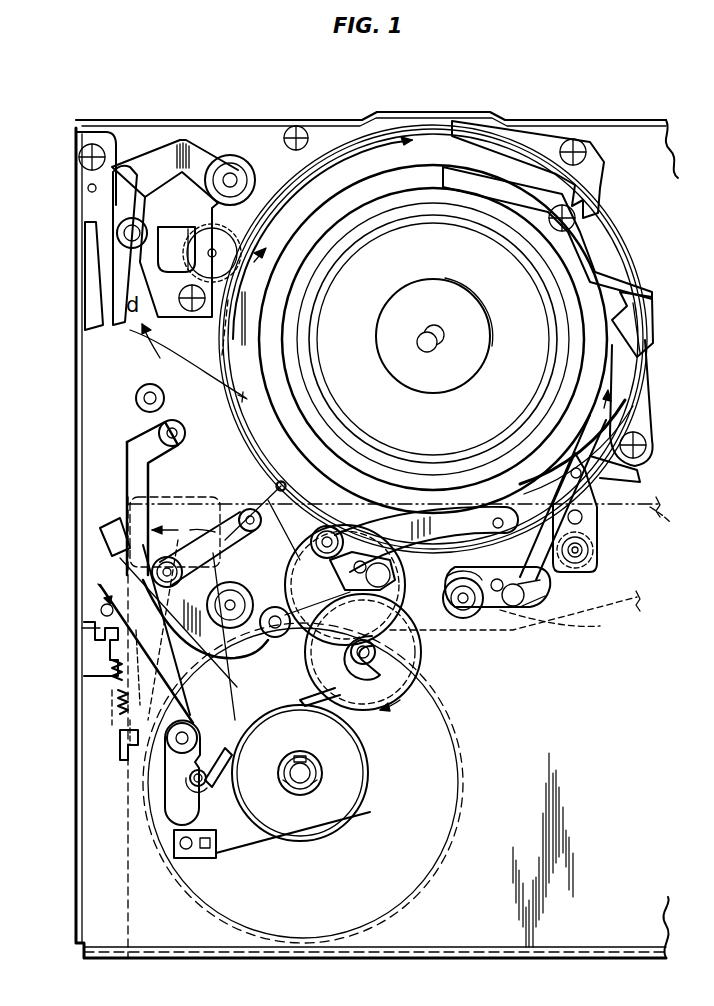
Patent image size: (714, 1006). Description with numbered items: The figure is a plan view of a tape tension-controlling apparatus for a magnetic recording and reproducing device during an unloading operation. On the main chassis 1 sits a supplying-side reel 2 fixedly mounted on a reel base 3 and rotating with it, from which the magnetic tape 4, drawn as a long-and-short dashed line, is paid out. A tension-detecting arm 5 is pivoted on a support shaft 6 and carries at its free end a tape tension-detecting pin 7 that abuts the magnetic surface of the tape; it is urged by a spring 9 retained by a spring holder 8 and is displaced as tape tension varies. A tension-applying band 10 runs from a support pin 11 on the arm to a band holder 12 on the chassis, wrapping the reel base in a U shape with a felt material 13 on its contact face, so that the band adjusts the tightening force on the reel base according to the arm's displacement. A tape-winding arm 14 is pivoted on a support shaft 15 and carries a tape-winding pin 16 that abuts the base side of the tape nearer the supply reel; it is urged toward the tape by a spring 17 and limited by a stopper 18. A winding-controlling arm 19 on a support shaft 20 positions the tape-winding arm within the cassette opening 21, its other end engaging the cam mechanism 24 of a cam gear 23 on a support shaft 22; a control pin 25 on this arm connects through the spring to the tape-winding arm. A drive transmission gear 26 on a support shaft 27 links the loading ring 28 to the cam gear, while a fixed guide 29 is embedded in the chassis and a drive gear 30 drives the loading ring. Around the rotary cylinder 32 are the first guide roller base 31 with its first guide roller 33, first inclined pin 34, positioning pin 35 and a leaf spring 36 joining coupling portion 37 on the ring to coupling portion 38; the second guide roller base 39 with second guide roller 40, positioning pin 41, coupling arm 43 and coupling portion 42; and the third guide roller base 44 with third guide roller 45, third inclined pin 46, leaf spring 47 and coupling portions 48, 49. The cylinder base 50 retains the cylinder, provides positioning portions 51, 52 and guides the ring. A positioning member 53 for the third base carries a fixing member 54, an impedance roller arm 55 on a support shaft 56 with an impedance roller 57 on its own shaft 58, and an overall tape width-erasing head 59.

The main chassis 1 is at (95, 378).
The supplying-side reel 2 is at (380, 928).
The reel base 3 is at (316, 836).
The magnetic tape 4 is at (665, 526).
The tension-detecting arm 5 is at (128, 470).
The support shaft 6 is at (170, 745).
The tape tension-detecting pin 7 is at (158, 430).
The spring holder 8 is at (84, 672).
The spring 9 is at (110, 708).
The tension-applying band 10 is at (236, 846).
The support pin 11 is at (208, 782).
The band holder 12 is at (205, 858).
The felt material 13 is at (366, 788).
The tape-winding arm 14 is at (148, 540).
The support shaft 15 is at (104, 538).
The tape-winding pin 16 is at (233, 495).
The spring 17 is at (100, 610).
The stopper 18 is at (92, 630).
The winding-controlling arm 19 is at (236, 652).
The support shaft 20 is at (278, 640).
The cassette opening 21 is at (548, 632).
The support shaft 22 is at (398, 650).
The cam gear 23 is at (405, 668).
The cam mechanism 24 is at (364, 690).
The control pin 25 is at (150, 574).
The drive transmission gear 26 is at (306, 584).
The support shaft 27 is at (234, 596).
The loading ring 28 is at (243, 358).
The fixed guide 29 is at (136, 400).
The drive gear 30 is at (166, 188).
The first guide roller base 31 is at (276, 486).
The rotary cylinder 32 is at (488, 235).
The first guide roller 33 is at (305, 552).
The first inclined pin 34 is at (366, 565).
The positioning pin 35 is at (276, 482).
The leaf spring 36 is at (478, 506).
The coupling portion 37 is at (498, 518).
The coupling portion 38 is at (343, 558).
The second guide roller base 39 is at (584, 516).
The second guide roller 40 is at (597, 564).
The positioning pin 41 is at (600, 476).
The coupling portion 42 is at (590, 540).
The coupling arm 43 is at (638, 470).
The third guide roller base 44 is at (532, 608).
The third guide roller 45 is at (466, 618).
The third inclined pin 46 is at (540, 612).
The leaf spring 47 is at (540, 548).
The coupling portion 48 is at (540, 462).
The coupling portion 49 is at (496, 598).
The cylinder base 50 is at (578, 258).
The positioning portion 51 is at (594, 178).
The positioning portion 52 is at (658, 304).
The positioning member 53 is at (116, 136).
The fixing member 54 is at (88, 203).
The impedance roller arm 55 is at (194, 156).
The support shaft 56 is at (117, 233).
The impedance roller 57 is at (240, 165).
The shaft 58 is at (230, 173).
The overall tape width-erasing head 59 is at (168, 244).